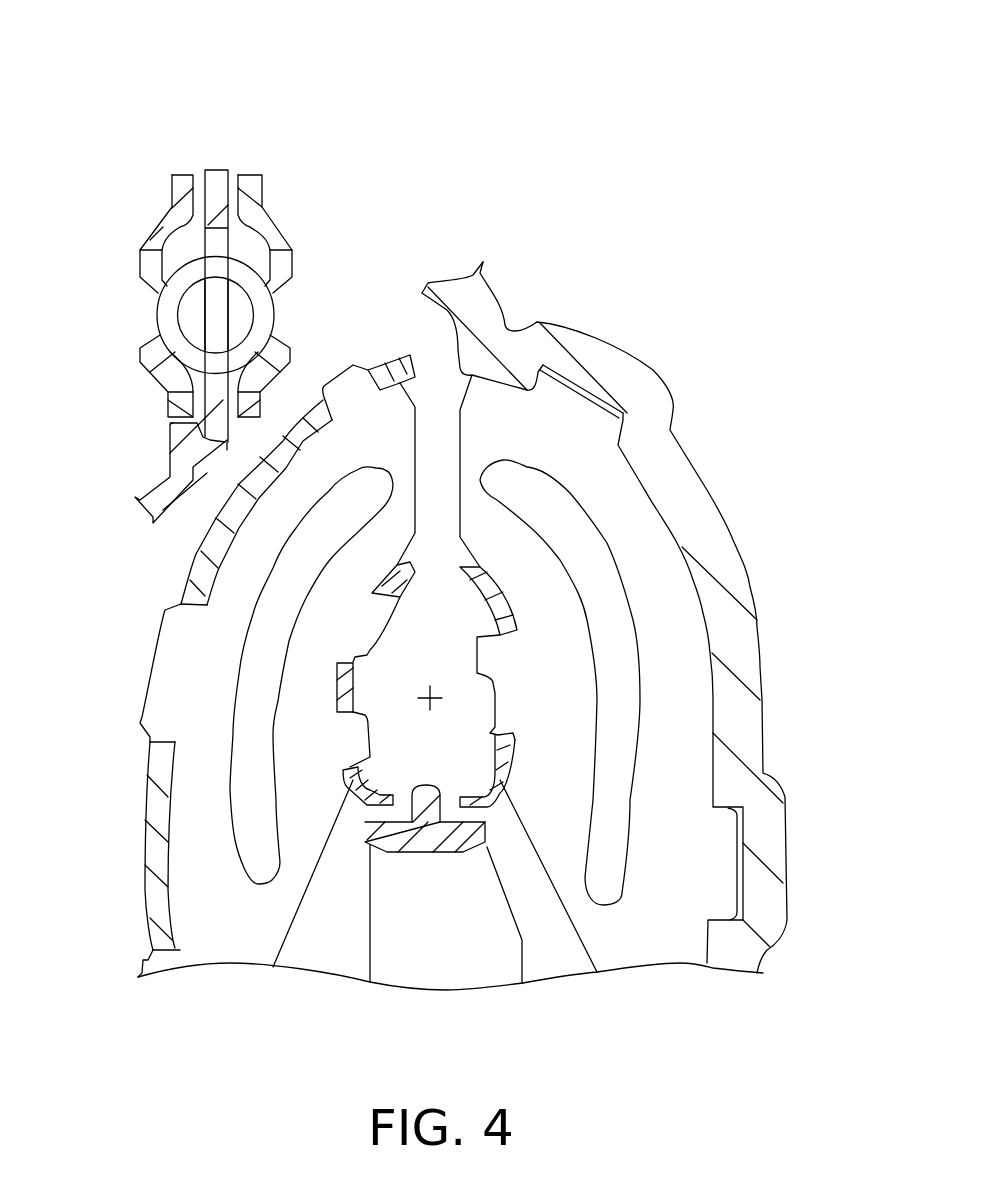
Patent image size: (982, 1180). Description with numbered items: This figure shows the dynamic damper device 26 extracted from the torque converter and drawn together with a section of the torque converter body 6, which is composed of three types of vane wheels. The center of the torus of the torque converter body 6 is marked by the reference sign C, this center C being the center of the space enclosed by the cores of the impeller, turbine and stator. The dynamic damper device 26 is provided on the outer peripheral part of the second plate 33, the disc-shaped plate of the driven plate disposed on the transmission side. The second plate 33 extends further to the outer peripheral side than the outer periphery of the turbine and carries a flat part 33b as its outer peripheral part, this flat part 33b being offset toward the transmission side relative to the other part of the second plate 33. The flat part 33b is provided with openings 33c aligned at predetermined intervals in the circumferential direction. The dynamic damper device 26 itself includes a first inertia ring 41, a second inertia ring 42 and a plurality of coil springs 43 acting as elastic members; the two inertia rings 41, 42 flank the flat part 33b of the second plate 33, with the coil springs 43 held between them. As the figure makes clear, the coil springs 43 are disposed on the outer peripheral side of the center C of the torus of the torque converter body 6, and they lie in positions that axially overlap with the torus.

The torque converter body 6 is at (700, 443).
The dynamic damper device 26 is at (303, 172).
The second plate 33 is at (153, 487).
The flat part 33b is at (215, 170).
The openings 33c is at (218, 303).
The first inertia ring 41 is at (170, 193).
The second inertia ring 42 is at (272, 212).
The coil springs 43 is at (170, 312).
The center of the torus C is at (440, 688).